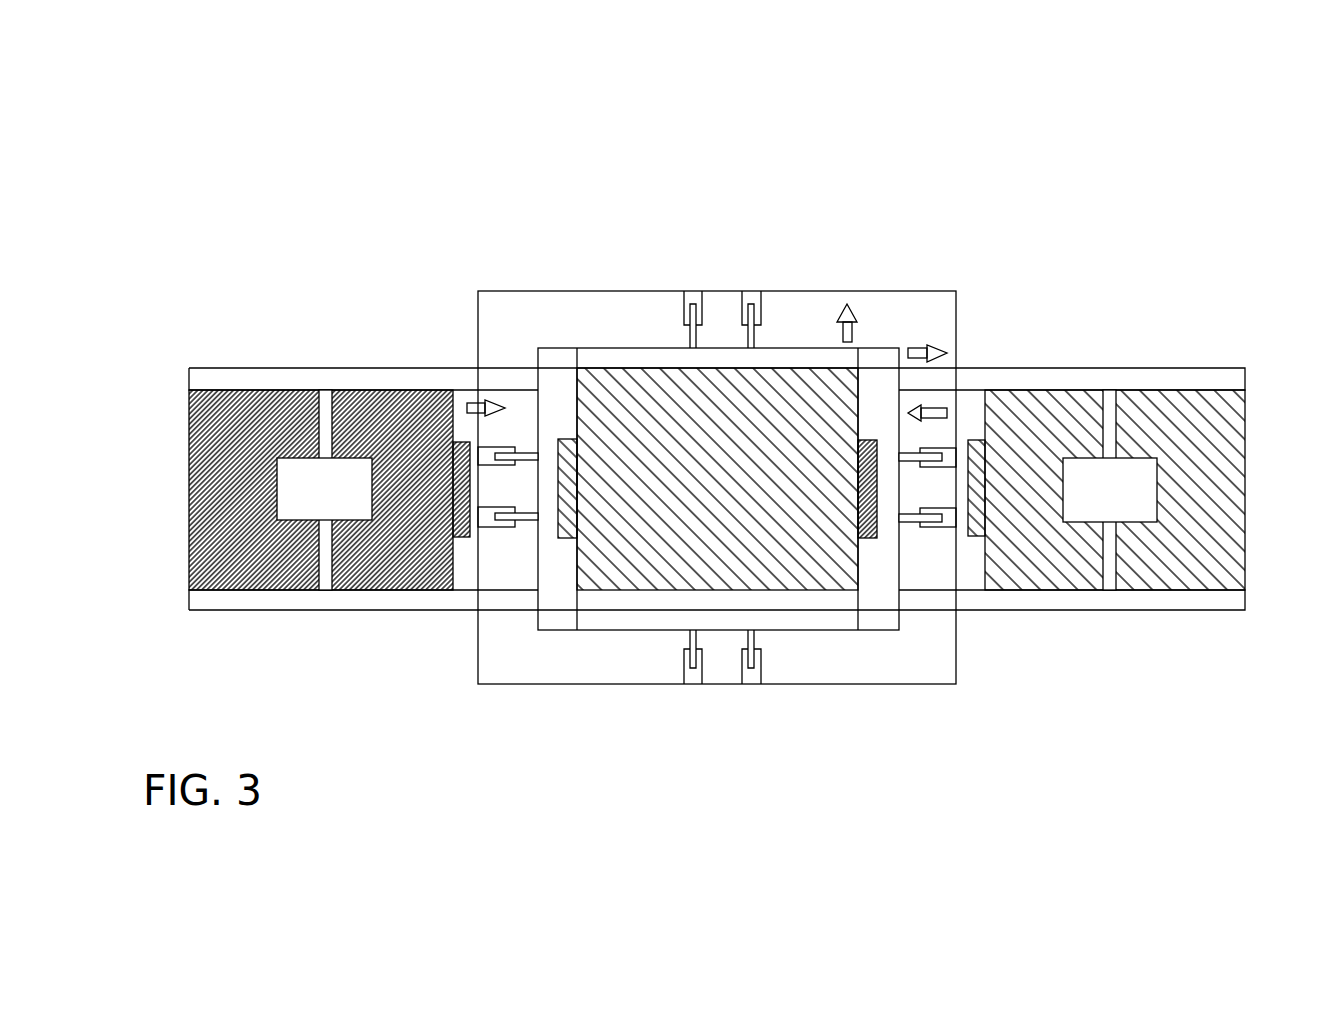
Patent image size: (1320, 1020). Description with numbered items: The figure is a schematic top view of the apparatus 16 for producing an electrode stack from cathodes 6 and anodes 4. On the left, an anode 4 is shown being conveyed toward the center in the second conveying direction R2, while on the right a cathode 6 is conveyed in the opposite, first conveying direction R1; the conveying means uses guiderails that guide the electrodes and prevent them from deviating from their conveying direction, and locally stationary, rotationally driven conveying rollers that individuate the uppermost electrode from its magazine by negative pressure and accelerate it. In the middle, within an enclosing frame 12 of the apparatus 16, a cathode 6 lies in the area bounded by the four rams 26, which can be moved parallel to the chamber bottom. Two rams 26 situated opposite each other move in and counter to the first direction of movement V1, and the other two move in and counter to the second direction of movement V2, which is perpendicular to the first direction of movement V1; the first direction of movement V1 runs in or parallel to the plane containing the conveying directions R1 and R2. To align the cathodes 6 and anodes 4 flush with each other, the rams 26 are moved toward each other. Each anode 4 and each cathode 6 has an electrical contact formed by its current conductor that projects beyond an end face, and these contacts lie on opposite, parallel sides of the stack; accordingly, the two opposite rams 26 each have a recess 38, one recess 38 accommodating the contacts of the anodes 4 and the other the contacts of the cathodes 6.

The apparatus 16 is at (427, 152).
The housing 12 is at (503, 317).
The rams 26 is at (559, 359).
The anode 4 is at (241, 577).
The cathode 6 is at (663, 592).
The recess 38 is at (557, 516).
The first direction of movement V1 is at (920, 353).
The second direction of movement V2 is at (847, 330).
The first conveying direction R1 is at (939, 413).
The second conveying direction R2 is at (477, 408).